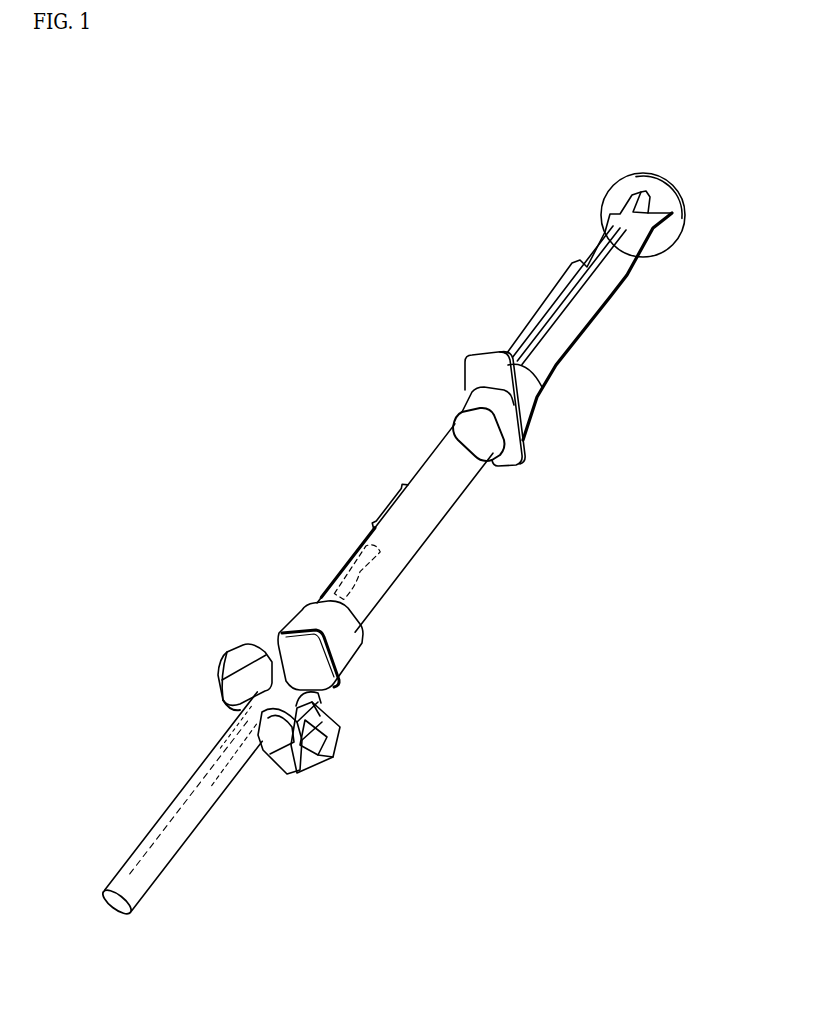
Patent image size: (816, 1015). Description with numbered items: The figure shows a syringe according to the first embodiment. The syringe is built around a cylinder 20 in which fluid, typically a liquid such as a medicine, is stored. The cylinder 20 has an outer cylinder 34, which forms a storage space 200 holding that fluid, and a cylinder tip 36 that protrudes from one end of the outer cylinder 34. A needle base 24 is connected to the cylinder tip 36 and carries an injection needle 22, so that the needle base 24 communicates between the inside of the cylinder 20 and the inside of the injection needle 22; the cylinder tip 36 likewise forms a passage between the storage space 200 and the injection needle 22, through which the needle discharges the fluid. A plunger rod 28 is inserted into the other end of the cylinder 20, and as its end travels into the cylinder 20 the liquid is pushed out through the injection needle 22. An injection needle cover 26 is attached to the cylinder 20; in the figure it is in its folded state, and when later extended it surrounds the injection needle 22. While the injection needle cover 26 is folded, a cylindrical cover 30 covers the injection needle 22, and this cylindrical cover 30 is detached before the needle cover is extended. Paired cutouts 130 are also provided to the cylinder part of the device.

The cylinder 20 is at (428, 556).
The injection needle 22 is at (198, 817).
The needle base 24 is at (250, 765).
The injection needle cover 26 is at (226, 657).
The plunger rod 28 is at (565, 343).
The cylindrical cover 30 is at (135, 900).
The outer cylinder 34 is at (442, 466).
The cylinder tip 36 is at (330, 702).
The cutouts 130 is at (330, 745).
The storage space 200 is at (352, 560).